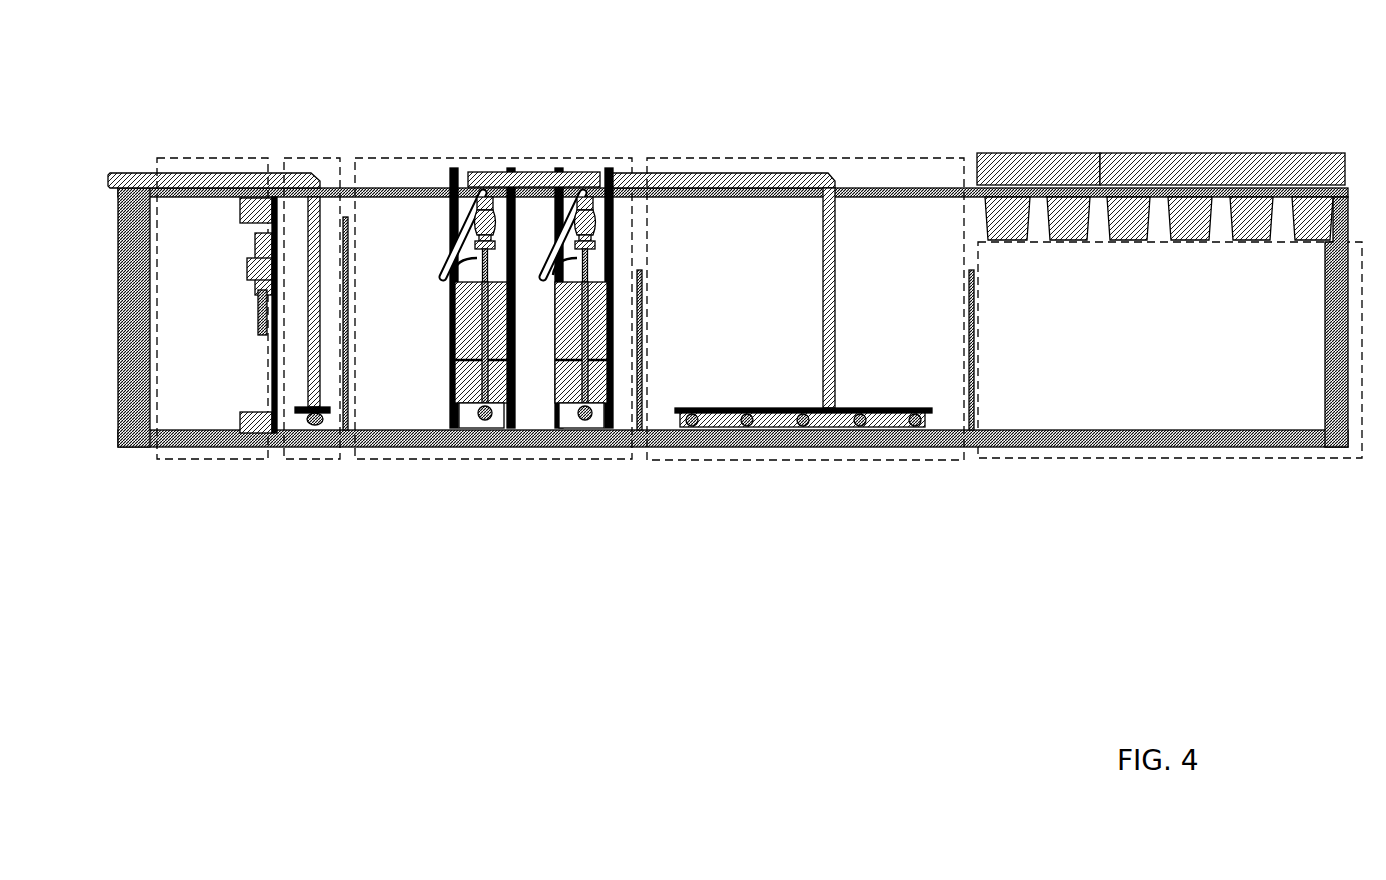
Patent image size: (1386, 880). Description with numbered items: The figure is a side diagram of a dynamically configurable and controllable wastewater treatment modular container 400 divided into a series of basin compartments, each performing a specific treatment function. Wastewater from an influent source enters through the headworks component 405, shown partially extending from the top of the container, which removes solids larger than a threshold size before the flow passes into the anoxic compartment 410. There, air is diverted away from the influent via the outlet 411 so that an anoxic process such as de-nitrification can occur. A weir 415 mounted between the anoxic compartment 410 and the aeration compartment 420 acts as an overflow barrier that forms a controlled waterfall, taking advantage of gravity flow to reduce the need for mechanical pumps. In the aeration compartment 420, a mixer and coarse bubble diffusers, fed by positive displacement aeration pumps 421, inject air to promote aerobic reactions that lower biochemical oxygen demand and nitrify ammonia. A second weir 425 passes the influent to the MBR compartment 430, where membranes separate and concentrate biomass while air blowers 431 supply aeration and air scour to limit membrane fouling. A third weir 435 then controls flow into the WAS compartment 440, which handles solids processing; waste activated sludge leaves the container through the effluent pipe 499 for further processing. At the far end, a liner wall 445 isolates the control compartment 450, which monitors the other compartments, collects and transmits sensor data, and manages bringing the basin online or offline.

The modular container 400 is at (1288, 55).
The headworks component 405 is at (1145, 153).
The anoxic compartment 410 is at (1100, 458).
The outlet 411 is at (1019, 153).
The weir 415 is at (971, 448).
The aeration compartment 420 is at (782, 158).
The positive displacement aeration pumps 421 is at (807, 427).
The weir 425 is at (640, 447).
The MBR compartment 430 is at (528, 158).
The air blowers 431 is at (525, 358).
The weir 435 is at (346, 447).
The WAS compartment 440 is at (308, 160).
The liner wall 445 is at (275, 447).
The control compartment 450 is at (157, 167).
The effluent pipe 499 is at (117, 173).